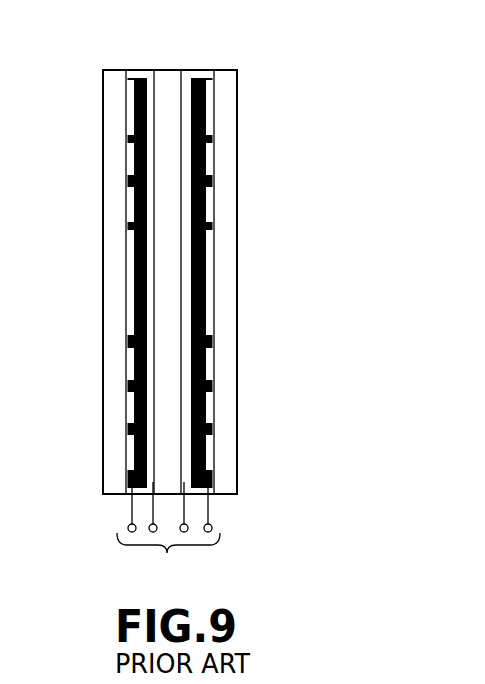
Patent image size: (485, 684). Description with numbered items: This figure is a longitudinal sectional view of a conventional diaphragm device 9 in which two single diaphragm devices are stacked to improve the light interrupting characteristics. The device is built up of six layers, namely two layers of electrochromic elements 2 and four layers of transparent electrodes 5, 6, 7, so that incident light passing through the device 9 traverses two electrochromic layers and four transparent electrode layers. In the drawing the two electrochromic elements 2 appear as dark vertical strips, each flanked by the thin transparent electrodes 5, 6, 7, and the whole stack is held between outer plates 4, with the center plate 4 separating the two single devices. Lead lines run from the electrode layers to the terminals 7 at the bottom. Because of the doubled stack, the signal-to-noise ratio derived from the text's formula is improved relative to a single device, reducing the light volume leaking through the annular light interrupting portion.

The diaphragm device 9 is at (366, 72).
The plate 4 is at (108, 93).
The electrochromic element 2 is at (128, 155).
The transparent electrode 5 is at (127, 200).
The transparent electrode 6 is at (155, 265).
The transparent electrode 7 is at (168, 535).